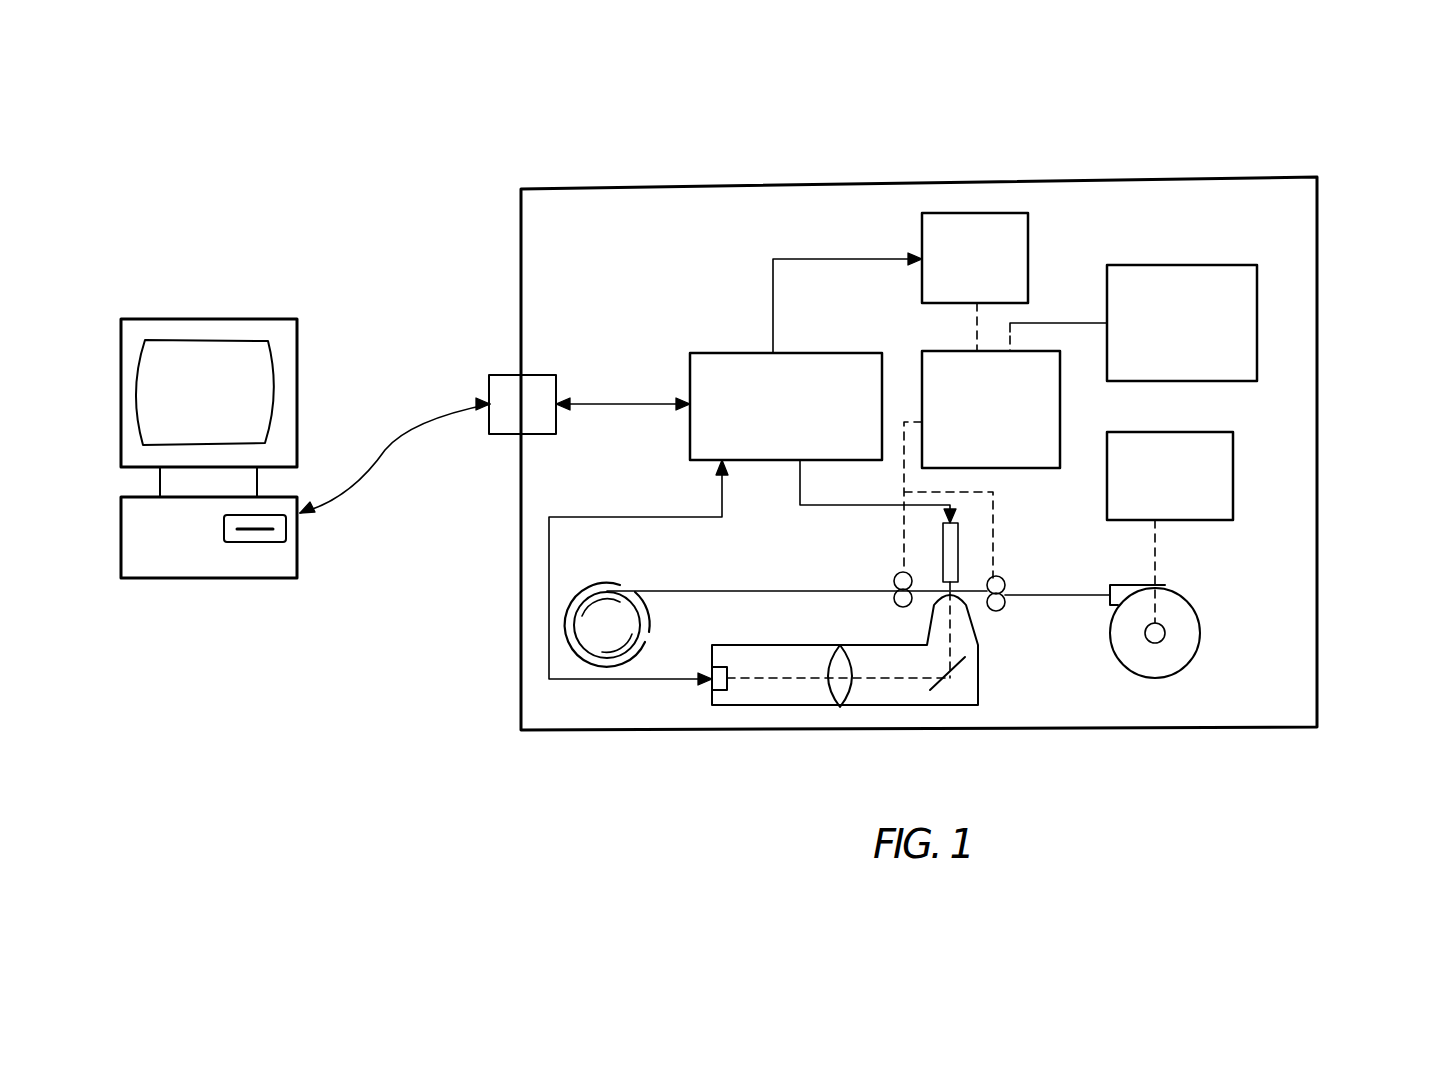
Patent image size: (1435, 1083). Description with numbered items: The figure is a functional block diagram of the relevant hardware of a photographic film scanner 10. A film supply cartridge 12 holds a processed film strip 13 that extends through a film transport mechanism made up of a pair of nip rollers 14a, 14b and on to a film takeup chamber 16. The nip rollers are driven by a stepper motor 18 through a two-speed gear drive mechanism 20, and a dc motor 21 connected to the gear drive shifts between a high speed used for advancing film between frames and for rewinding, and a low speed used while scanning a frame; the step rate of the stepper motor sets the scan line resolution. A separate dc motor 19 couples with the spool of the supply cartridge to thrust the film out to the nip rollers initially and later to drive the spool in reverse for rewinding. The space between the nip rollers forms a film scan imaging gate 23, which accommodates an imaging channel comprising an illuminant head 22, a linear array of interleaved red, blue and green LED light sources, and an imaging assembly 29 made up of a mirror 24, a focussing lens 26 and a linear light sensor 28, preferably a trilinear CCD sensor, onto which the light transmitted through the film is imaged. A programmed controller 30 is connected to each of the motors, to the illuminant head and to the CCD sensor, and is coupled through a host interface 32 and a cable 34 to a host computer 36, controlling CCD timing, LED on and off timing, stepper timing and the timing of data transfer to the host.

The film scanner 10 is at (1330, 213).
The film supply cartridge 12 is at (1183, 596).
The processed film strip 13 is at (1063, 592).
The nip roller 14a is at (897, 572).
The nip roller 14b is at (1003, 610).
The film takeup chamber 16 is at (587, 588).
The stepper motor 18 is at (1228, 266).
The dc motor 19 is at (1233, 450).
The two-speed gear drive mechanism 20 is at (920, 366).
The dc motor 21 is at (1028, 228).
The illuminant head 22 is at (960, 537).
The film scan imaging gate 23 is at (985, 565).
The mirror 24 is at (950, 680).
The focussing lens 26 is at (847, 700).
The linear light sensor 28 is at (720, 690).
The imaging assembly 29 is at (795, 712).
The programmed controller 30 is at (738, 353).
The host interface 32 is at (503, 375).
The cable 34 is at (422, 418).
The host computer 36 is at (272, 578).